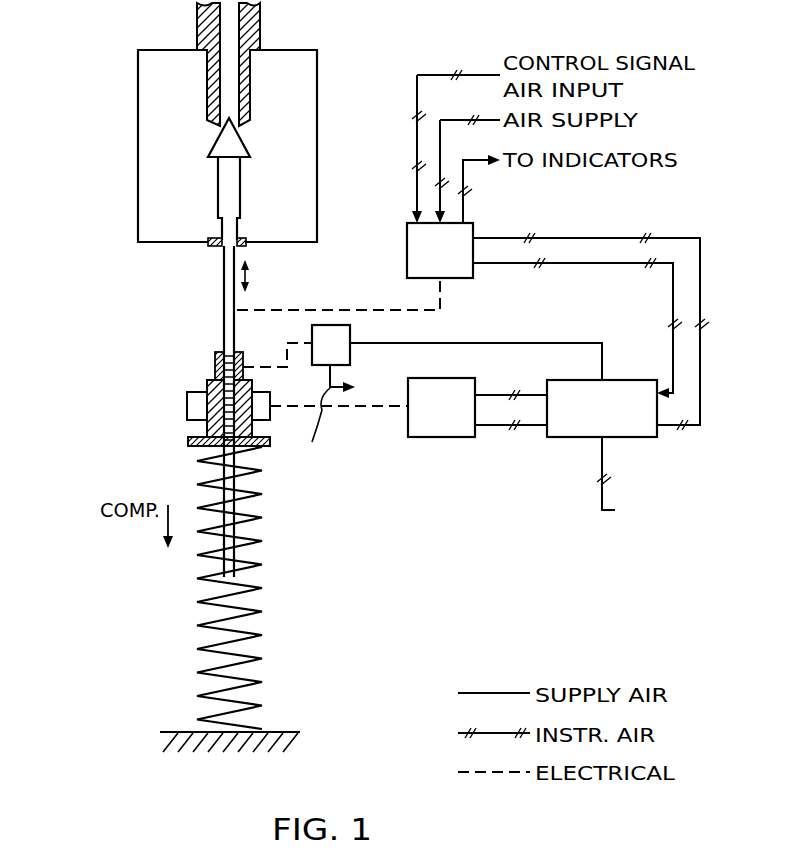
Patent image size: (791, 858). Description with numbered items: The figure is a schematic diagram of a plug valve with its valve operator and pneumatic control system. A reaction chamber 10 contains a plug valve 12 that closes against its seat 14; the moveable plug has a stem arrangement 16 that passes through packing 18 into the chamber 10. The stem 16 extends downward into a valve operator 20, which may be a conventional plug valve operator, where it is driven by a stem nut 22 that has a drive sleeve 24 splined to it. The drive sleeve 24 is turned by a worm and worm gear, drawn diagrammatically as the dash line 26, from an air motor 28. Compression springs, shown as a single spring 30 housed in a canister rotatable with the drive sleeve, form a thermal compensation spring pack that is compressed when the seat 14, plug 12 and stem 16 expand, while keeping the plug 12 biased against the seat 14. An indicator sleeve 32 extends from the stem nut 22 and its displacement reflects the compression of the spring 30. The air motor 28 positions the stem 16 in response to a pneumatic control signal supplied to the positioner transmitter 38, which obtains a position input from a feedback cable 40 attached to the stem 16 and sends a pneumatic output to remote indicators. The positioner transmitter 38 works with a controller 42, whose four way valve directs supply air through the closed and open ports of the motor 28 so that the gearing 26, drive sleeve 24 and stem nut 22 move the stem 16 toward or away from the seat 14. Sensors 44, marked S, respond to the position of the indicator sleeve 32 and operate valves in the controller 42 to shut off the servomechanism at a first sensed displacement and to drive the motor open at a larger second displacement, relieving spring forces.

The reaction chamber 10 is at (138, 98).
The plug valve 12 is at (250, 155).
The seat 14 is at (257, 112).
The stem arrangement 16 is at (240, 205).
The packing 18 is at (208, 245).
The valve operator 20 is at (223, 280).
The stem nut 22 is at (197, 407).
The drive sleeve 24 is at (188, 418).
The worm and worm gear 26 is at (345, 408).
The air motor 28 is at (455, 437).
The spring 30 is at (198, 603).
The indicator sleeve 32 is at (207, 388).
The positioner transmitter 38 is at (473, 223).
The feedback cable 40 is at (288, 306).
The controller 42 is at (640, 437).
The sensors 44 is at (351, 356).